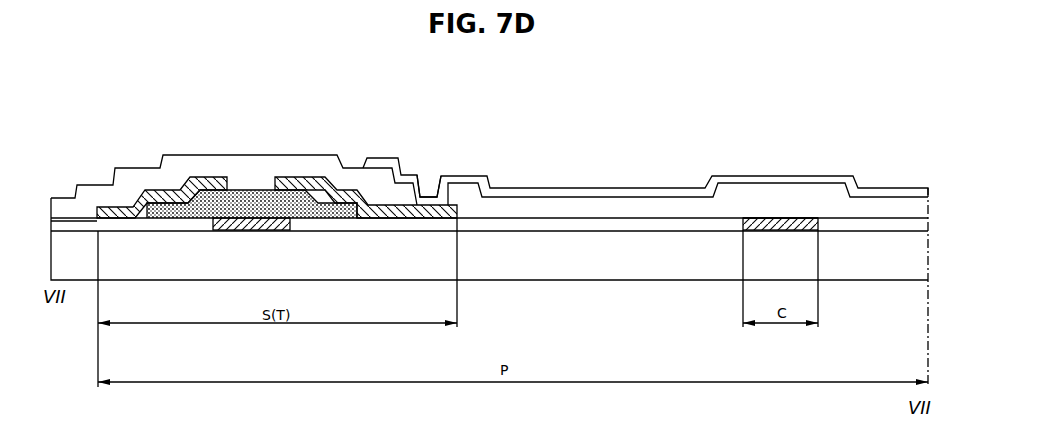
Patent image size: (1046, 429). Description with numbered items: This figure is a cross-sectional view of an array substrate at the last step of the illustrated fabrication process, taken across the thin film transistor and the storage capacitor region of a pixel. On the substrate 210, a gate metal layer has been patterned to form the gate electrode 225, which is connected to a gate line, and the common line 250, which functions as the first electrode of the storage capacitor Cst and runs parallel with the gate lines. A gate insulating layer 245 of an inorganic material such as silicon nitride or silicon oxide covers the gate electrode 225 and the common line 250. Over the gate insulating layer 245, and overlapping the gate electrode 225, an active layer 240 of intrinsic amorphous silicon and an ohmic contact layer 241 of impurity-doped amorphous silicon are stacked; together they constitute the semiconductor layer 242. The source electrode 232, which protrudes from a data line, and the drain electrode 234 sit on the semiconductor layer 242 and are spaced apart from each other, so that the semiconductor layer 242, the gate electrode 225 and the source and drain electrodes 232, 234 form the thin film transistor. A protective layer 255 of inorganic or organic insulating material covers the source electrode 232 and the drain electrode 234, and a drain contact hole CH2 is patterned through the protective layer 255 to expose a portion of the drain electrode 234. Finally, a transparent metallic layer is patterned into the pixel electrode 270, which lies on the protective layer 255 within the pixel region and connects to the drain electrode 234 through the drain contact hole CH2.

The substrate 210 is at (918, 265).
The gate insulating layer 245 is at (582, 229).
The gate electrode 225 is at (237, 231).
The common line 250 is at (782, 231).
The storage capacitor Cst is at (806, 209).
The source electrode 232 is at (195, 177).
The drain electrode 234 is at (284, 177).
The active layer 240 is at (350, 190).
The ohmic contact layer 241 is at (252, 169).
The semiconductor layer 242 is at (267, 136).
The protective layer 255 is at (242, 155).
The pixel electrode 270 is at (590, 188).
The drain contact hole CH2 is at (431, 172).